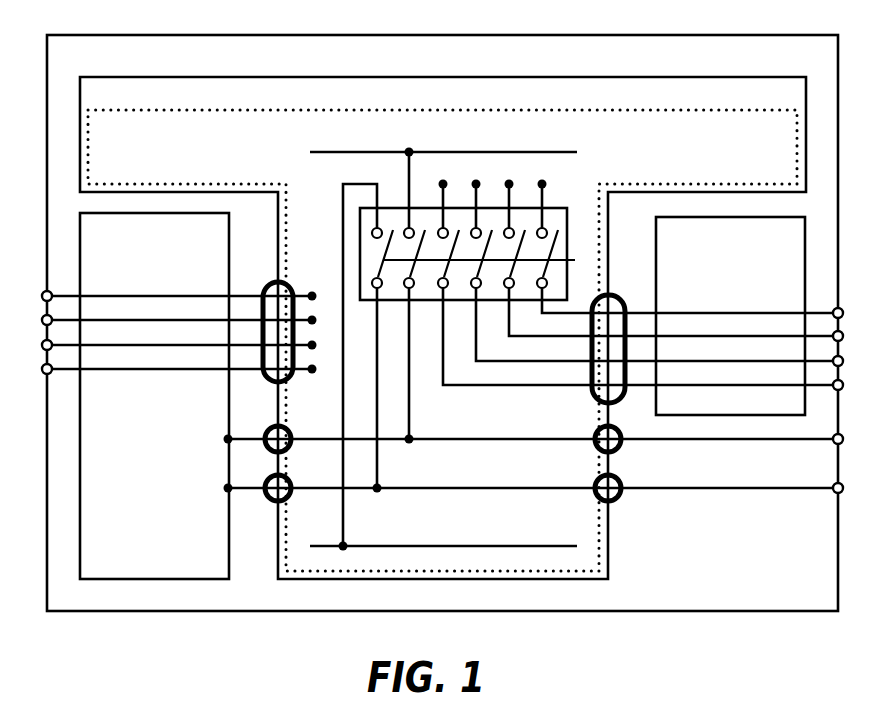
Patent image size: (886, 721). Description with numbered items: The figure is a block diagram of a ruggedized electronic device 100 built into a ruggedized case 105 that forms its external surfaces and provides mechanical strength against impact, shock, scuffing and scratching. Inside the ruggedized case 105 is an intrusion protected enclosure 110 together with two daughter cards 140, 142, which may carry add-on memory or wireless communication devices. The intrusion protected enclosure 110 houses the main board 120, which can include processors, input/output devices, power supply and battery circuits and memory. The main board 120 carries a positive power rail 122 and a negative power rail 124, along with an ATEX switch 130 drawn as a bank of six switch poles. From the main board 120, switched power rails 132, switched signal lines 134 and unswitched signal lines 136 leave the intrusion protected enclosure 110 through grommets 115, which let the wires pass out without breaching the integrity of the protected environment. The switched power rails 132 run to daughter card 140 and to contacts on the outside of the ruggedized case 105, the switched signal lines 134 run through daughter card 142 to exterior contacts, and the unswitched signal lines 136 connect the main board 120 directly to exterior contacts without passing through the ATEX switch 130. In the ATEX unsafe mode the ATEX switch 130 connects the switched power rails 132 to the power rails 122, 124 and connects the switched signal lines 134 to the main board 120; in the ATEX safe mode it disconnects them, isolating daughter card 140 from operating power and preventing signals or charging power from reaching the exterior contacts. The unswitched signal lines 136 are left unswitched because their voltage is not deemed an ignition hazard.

The ruggedized electronic device 100 is at (439, 327).
The ruggedized case 105 is at (56, 35).
The intrusion protected enclosure 110 is at (85, 77).
The grommet 115 is at (290, 281).
The main board 120 is at (442, 340).
The power rail 122 is at (572, 138).
The power rail 124 is at (562, 545).
The ATEX switch 130 is at (572, 196).
The switched power rails 132 is at (500, 442).
The switched signal lines 134 is at (503, 388).
The unswitched signal lines 136 is at (145, 371).
The daughter card 140 is at (154, 396).
The daughter card 142 is at (730, 316).